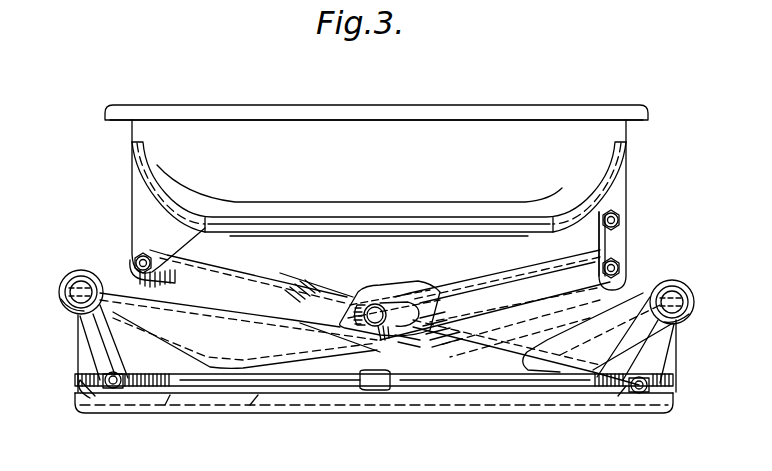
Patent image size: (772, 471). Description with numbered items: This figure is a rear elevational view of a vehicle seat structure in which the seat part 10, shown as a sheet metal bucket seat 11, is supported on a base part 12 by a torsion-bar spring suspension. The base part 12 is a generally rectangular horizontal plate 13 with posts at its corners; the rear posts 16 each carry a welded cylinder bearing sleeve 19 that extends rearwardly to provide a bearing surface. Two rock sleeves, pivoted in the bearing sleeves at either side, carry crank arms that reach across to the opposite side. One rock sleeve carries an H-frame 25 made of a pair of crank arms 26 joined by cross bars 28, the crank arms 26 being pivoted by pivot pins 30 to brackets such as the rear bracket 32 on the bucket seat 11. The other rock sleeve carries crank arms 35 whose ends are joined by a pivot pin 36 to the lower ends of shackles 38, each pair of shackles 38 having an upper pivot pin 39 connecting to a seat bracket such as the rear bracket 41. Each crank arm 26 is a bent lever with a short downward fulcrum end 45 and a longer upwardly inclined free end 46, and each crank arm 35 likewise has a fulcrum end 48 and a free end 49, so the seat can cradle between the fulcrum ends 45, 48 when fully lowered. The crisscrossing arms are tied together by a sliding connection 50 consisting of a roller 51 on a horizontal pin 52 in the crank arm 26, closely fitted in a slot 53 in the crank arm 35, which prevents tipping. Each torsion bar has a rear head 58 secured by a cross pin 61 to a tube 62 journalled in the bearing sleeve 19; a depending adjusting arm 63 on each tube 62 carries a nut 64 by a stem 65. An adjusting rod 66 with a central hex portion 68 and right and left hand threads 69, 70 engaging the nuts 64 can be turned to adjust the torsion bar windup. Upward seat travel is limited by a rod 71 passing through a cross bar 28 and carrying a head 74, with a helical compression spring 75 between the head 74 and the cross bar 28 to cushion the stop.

The seat part 10 is at (490, 97).
The bucket seat 11 is at (370, 102).
The base part 12 is at (130, 413).
The horizontal plate 13 is at (253, 410).
The rear posts 16 is at (76, 350).
The bearing sleeve 19 is at (61, 280).
The H-frame 25 is at (320, 283).
The crank arms 26 is at (240, 300).
The cross bars 28 is at (300, 285).
The pivot pins 30 is at (146, 255).
The rear bracket 32 is at (132, 198).
The crank arms 35 is at (470, 280).
The pivot pin 36 is at (620, 268).
The shackles 38 is at (627, 243).
The upper pivot pin 39 is at (620, 221).
The rear bracket 41 is at (627, 184).
The fulcrum end 45 is at (588, 326).
The free end 46 is at (205, 281).
The fulcrum end 48 is at (168, 322).
The free end 49 is at (555, 291).
The sliding connection 50 is at (405, 282).
The roller 51 is at (385, 342).
The pin 52 is at (375, 304).
The slot 53 is at (410, 305).
The rear cylinder head 58 is at (85, 283).
The cross pin 61 is at (67, 292).
The tube 62 is at (67, 306).
The adjusting arm 63 is at (97, 358).
The nut 64 is at (95, 394).
The stem 65 is at (118, 372).
The adjusting rod 66 is at (320, 394).
The hex portion 68 is at (375, 392).
The right hand threads 69 is at (170, 398).
The left hand threads 70 is at (676, 392).
The rod 71 is at (588, 368).
The head 74 is at (435, 313).
The helical compression spring 75 is at (408, 354).